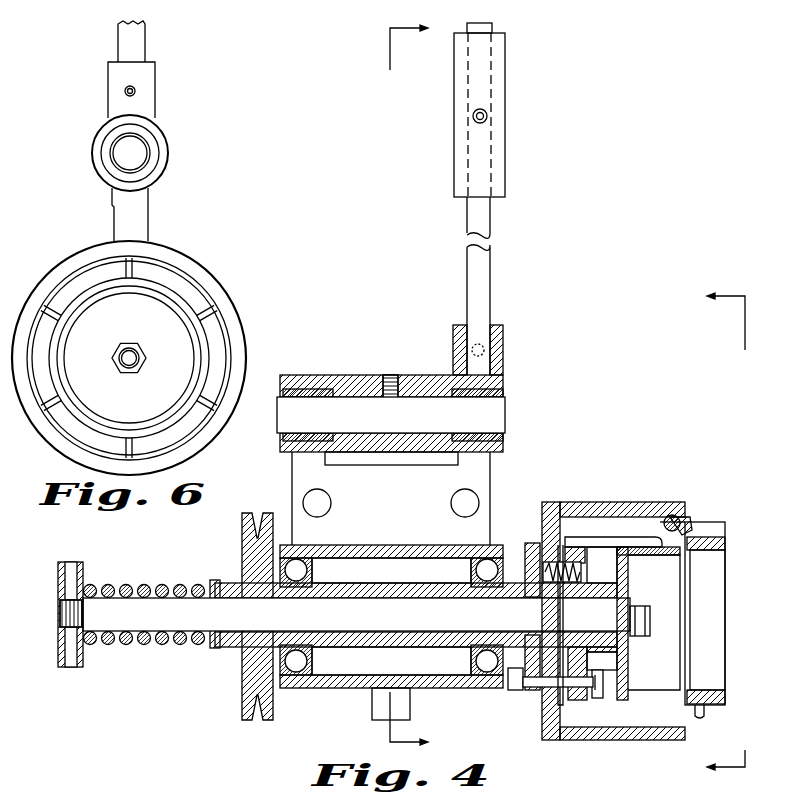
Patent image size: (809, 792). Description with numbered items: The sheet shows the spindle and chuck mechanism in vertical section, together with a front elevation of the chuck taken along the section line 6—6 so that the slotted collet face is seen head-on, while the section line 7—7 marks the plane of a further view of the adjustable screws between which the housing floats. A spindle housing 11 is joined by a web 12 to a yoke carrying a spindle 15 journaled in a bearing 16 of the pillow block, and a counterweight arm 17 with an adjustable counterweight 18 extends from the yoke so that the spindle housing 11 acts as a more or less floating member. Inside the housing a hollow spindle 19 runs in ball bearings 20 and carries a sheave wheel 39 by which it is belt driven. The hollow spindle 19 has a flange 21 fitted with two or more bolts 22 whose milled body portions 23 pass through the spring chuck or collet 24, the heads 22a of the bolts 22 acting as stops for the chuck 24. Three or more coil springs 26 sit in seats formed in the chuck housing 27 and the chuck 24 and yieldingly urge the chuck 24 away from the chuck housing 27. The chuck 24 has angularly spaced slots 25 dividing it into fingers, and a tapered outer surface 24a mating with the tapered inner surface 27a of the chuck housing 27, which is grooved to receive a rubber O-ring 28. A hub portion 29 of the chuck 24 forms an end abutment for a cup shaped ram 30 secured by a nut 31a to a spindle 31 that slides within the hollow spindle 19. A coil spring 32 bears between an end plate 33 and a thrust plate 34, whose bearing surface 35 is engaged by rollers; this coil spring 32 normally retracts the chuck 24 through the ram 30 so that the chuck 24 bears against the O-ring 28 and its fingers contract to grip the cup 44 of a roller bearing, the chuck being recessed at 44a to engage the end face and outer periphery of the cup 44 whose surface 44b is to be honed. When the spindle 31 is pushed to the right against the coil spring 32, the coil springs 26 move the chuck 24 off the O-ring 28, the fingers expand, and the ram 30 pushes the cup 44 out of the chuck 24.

In FIG. 4, the section line 6— 6 is at (720, 534).
In FIG. 4, the section line 7— 7 is at (416, 390).
In FIG. 4, the spindle housing 11 is at (438, 690).
In FIG. 4, the web 12 is at (484, 482).
In FIG. 6, the spindle 15 is at (140, 151).
In FIG. 4, the spindle 15 is at (505, 415).
In FIG. 6, the bearing 16 is at (168, 170).
In FIG. 4, the bearing 16 is at (368, 375).
In FIG. 6, the counterweight arm 17 is at (146, 42).
In FIG. 4, the counterweight arm 17 is at (491, 283).
In FIG. 4, the adjustable counterweight 18 is at (505, 150).
In FIG. 4, the hollow spindle 19 is at (408, 596).
In FIG. 4, the ball bearings 20 is at (528, 543).
In FIG. 4, the flange 21 is at (560, 705).
In FIG. 4, the bolts 22 is at (515, 690).
In FIG. 4, the heads of bolts 22a is at (603, 697).
In FIG. 4, the body milled portion 23 is at (592, 668).
In FIG. 6, the spring chuck 24 is at (188, 300).
In FIG. 4, the spring chuck 24 is at (700, 528).
In FIG. 4, the tapered outer surface 24a is at (688, 522).
In FIG. 6, the angularly spaced slots 25 is at (216, 304).
In FIG. 4, the angularly spaced slots 25 is at (610, 546).
In FIG. 4, the coil springs 26 is at (562, 546).
In FIG. 6, the chuck housing 27 is at (247, 352).
In FIG. 4, the chuck housing 27 is at (620, 472).
In FIG. 4, the tapered inner surface 27a is at (674, 506).
In FIG. 4, the rubber O-ring 28 is at (674, 514).
In FIG. 4, the hub portion 29 is at (610, 562).
In FIG. 6, the cup shaped ram 30 is at (139, 330).
In FIG. 4, the cup shaped ram 30 is at (630, 586).
In FIG. 4, the spindle 31 is at (148, 596).
In FIG. 4, the nut 31a is at (650, 616).
In FIG. 4, the coil spring 32 is at (128, 646).
In FIG. 4, the end plate 33 is at (216, 578).
In FIG. 4, the thrust plate 34 is at (83, 572).
In FIG. 4, the bearing surface 35 is at (58, 578).
In FIG. 4, the sheave wheel 39 is at (252, 512).
In FIG. 4, the cup of a roller bearing 44 is at (725, 605).
In FIG. 4, the recess 44a is at (704, 712).
In FIG. 4, the surface of cup 44b is at (725, 692).